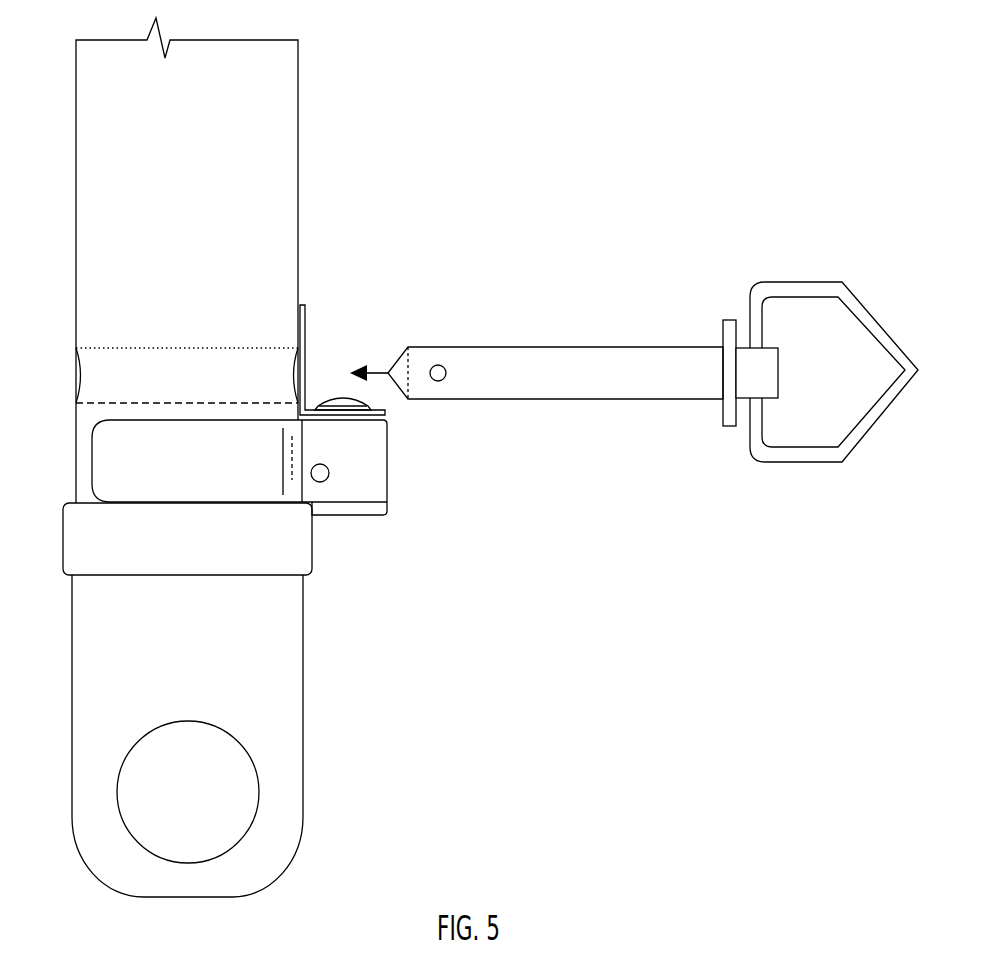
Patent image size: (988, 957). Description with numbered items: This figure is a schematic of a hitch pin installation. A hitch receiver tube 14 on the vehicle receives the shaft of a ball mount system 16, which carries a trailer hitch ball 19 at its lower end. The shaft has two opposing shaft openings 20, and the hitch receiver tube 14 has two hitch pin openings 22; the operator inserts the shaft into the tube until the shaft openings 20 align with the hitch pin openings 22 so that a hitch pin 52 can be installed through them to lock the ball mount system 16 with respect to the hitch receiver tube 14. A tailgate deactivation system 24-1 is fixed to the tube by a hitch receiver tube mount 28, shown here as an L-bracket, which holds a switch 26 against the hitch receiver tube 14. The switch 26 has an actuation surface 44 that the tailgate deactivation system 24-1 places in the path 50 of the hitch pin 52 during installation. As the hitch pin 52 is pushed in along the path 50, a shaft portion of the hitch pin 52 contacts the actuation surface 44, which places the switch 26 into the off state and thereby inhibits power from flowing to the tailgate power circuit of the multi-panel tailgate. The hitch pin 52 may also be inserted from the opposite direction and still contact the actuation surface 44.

The hitch receiver tube 14 is at (75, 265).
The ball mount system 16 is at (72, 680).
The trailer hitch ball 19 is at (247, 752).
The shaft openings 20 is at (82, 377).
The hitch pin openings 22 is at (75, 365).
The tailgate deactivation system 24-1 is at (412, 440).
The switch 26 is at (388, 472).
The hitch receiver tube mount 28 is at (120, 465).
The actuation surface 44 is at (340, 398).
The path 50 is at (380, 372).
The hitch pin 52 is at (546, 360).